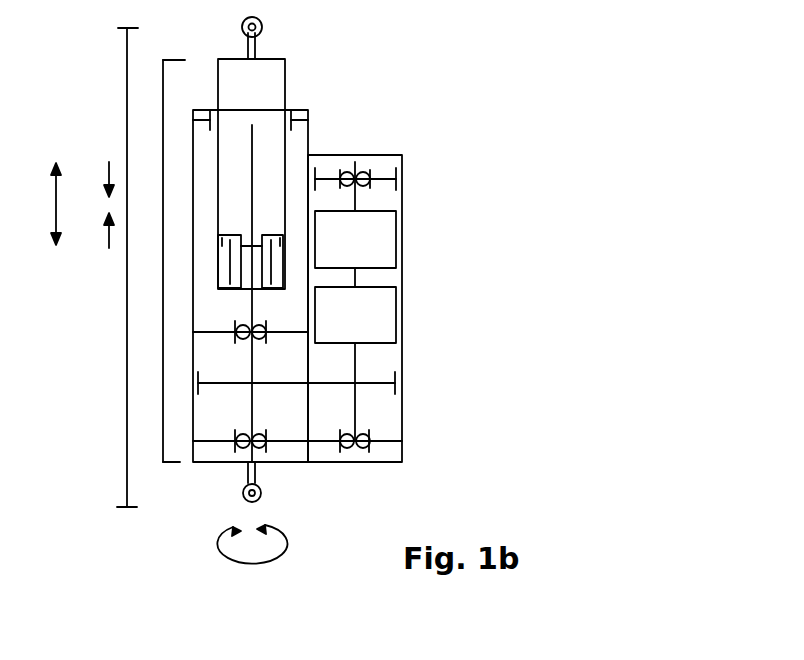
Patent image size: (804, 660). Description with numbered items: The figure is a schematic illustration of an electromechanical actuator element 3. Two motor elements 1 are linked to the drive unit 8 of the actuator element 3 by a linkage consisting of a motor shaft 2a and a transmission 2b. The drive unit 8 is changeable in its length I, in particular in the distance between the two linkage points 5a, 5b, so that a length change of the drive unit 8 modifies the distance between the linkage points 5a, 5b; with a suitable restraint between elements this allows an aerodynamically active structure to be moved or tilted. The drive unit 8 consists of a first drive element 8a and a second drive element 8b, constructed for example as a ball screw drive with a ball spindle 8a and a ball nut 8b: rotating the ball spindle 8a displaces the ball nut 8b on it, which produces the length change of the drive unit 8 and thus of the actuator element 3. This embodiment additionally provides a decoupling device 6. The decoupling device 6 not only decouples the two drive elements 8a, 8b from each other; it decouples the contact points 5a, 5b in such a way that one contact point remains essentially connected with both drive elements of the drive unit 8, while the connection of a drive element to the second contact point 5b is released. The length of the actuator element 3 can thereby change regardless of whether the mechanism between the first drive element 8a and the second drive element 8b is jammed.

The motor elements 1 is at (375, 242).
The motor shaft 2a is at (355, 408).
The transmission 2b is at (333, 383).
The actuator element 3 is at (374, 72).
The linkage point 5a is at (258, 490).
The second linkage point 5b is at (261, 28).
The decoupling device 6 is at (280, 240).
The drive unit 8 is at (163, 412).
The first drive element 8a is at (248, 405).
The second drive element 8b is at (267, 288).
The length I is at (82, 205).